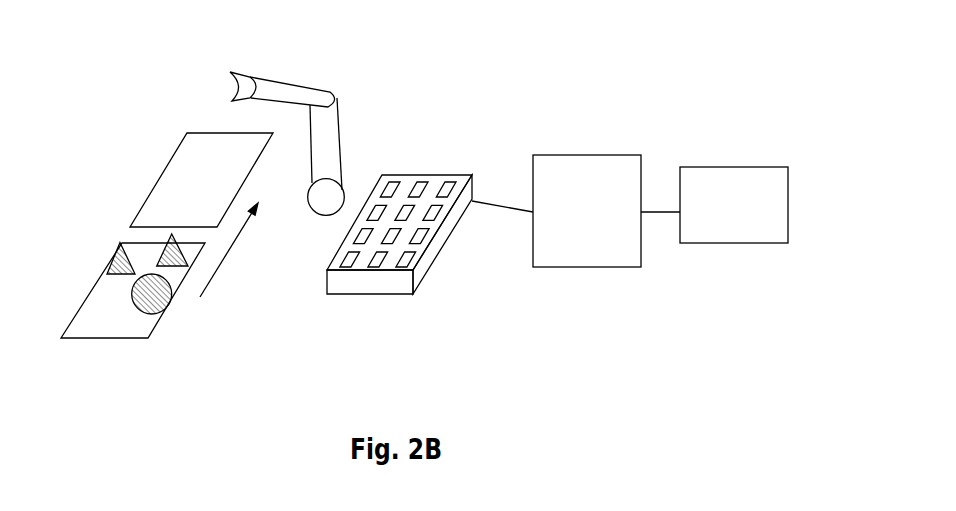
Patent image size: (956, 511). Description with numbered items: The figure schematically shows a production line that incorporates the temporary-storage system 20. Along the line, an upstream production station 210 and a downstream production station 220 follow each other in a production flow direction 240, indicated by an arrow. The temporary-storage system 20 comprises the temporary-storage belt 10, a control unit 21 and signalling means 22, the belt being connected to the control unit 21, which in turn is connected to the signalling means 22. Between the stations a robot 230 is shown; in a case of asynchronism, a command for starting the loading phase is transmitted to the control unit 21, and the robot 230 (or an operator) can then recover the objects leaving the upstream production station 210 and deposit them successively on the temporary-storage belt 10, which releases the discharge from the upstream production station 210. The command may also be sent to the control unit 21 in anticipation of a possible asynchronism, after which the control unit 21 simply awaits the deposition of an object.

The temporary-storage belt 10 is at (457, 177).
The temporary-storage system 20 is at (630, 157).
The control unit 21 is at (585, 155).
The signalling means 22 is at (743, 167).
The upstream production station 210 is at (95, 280).
The downstream production station 220 is at (173, 150).
The robot 230 is at (297, 85).
The production flow direction 240 is at (210, 280).